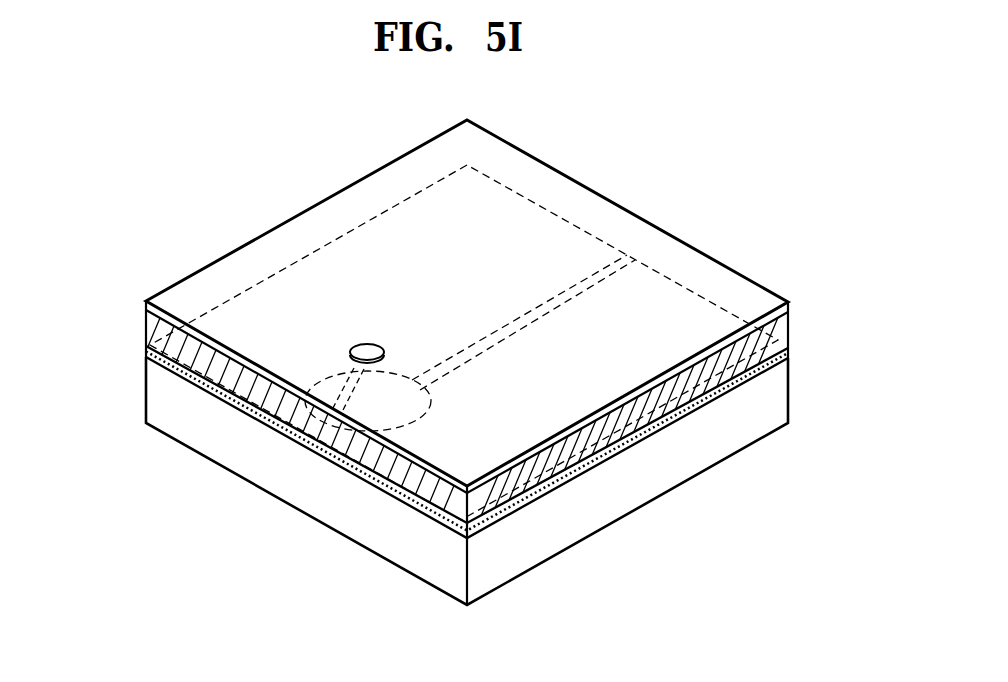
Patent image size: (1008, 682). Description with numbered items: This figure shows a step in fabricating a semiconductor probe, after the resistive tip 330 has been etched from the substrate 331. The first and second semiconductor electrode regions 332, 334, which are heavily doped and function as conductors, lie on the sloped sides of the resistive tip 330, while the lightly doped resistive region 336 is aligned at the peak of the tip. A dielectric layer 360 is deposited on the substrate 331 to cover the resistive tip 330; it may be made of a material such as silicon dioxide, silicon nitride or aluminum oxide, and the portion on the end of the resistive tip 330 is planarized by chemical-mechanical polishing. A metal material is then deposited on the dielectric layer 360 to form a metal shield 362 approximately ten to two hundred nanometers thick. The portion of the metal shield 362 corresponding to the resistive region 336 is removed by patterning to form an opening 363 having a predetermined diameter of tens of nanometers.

The resistive tip 330 is at (405, 365).
The substrate 331 is at (273, 482).
The first semiconductor electrode region 332 is at (330, 385).
The second semiconductor electrode region 334 is at (380, 410).
The resistive region 336 is at (418, 393).
The dielectric layer 360 is at (157, 329).
The metal shield 362 is at (202, 283).
The opening 363 is at (372, 347).